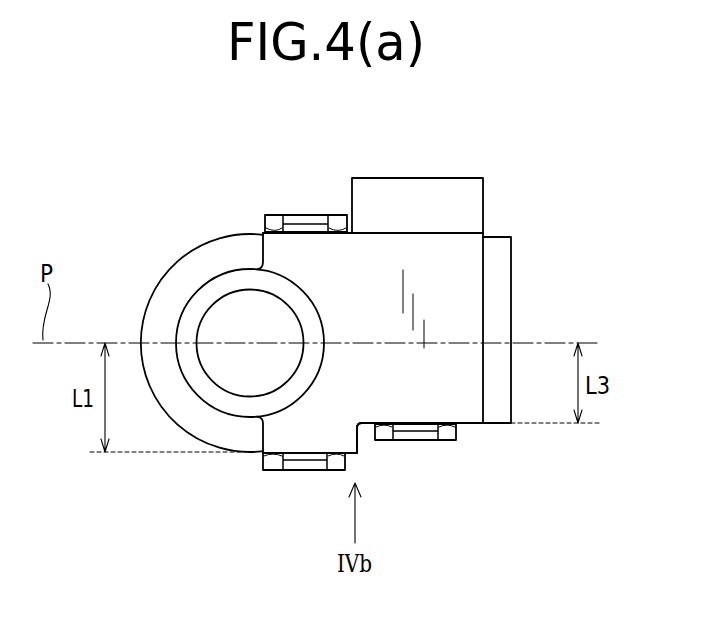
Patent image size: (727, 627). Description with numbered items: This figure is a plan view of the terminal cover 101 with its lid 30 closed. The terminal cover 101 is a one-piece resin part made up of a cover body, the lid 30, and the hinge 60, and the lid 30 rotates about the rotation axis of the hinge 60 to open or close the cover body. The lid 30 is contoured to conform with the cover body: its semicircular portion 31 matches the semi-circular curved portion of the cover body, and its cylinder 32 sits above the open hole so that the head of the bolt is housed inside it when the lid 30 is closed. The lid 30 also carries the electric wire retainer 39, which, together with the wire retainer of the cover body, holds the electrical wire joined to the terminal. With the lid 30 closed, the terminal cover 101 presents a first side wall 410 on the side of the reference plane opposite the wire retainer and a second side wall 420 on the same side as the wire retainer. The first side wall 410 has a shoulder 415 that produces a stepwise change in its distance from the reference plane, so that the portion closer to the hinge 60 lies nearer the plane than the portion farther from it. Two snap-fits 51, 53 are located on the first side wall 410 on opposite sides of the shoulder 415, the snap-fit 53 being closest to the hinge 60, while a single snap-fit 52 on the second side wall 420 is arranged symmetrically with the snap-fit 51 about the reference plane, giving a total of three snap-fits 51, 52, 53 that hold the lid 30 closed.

The terminal cover 101 is at (581, 156).
The lid 30 is at (460, 266).
The semicircular portion 31 is at (178, 292).
The cylinder 32 is at (241, 315).
The electric wire retainer 39 is at (402, 193).
The snap-fit 51 is at (276, 465).
The snap-fit 52 is at (277, 222).
The snap-fit 53 is at (448, 433).
The hinge 60 is at (497, 315).
The first side wall 410 is at (473, 425).
The shoulder 415 is at (360, 443).
The second side wall 420 is at (457, 230).